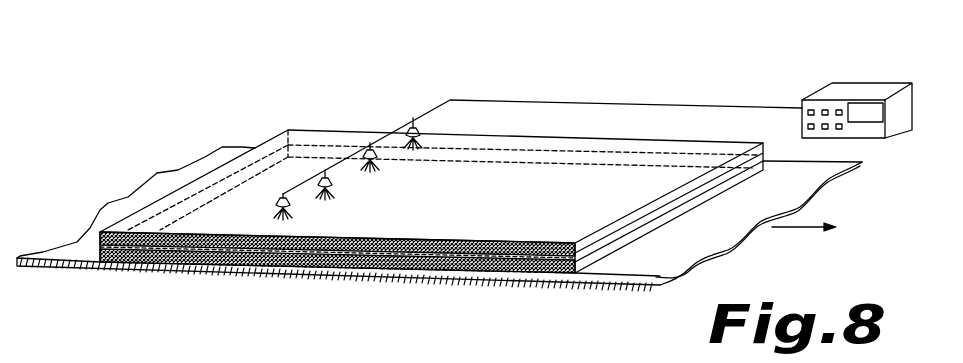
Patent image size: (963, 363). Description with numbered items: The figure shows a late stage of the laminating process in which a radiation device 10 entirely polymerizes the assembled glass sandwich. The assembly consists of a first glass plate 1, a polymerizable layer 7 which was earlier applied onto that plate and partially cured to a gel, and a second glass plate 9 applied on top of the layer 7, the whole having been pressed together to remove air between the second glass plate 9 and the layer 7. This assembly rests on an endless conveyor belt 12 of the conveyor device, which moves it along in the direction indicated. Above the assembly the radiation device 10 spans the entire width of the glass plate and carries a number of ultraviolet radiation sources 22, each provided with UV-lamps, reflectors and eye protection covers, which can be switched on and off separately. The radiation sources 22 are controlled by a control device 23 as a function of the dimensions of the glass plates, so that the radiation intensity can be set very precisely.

The glass plate 1 is at (135, 267).
The polymerizable layer 7 is at (233, 267).
The second glass plate 9 is at (405, 214).
The radiation device 10 is at (608, 55).
The endless conveyor belt 12 is at (72, 243).
The ultraviolet radiation sources 22 is at (405, 133).
The control device 23 is at (845, 92).